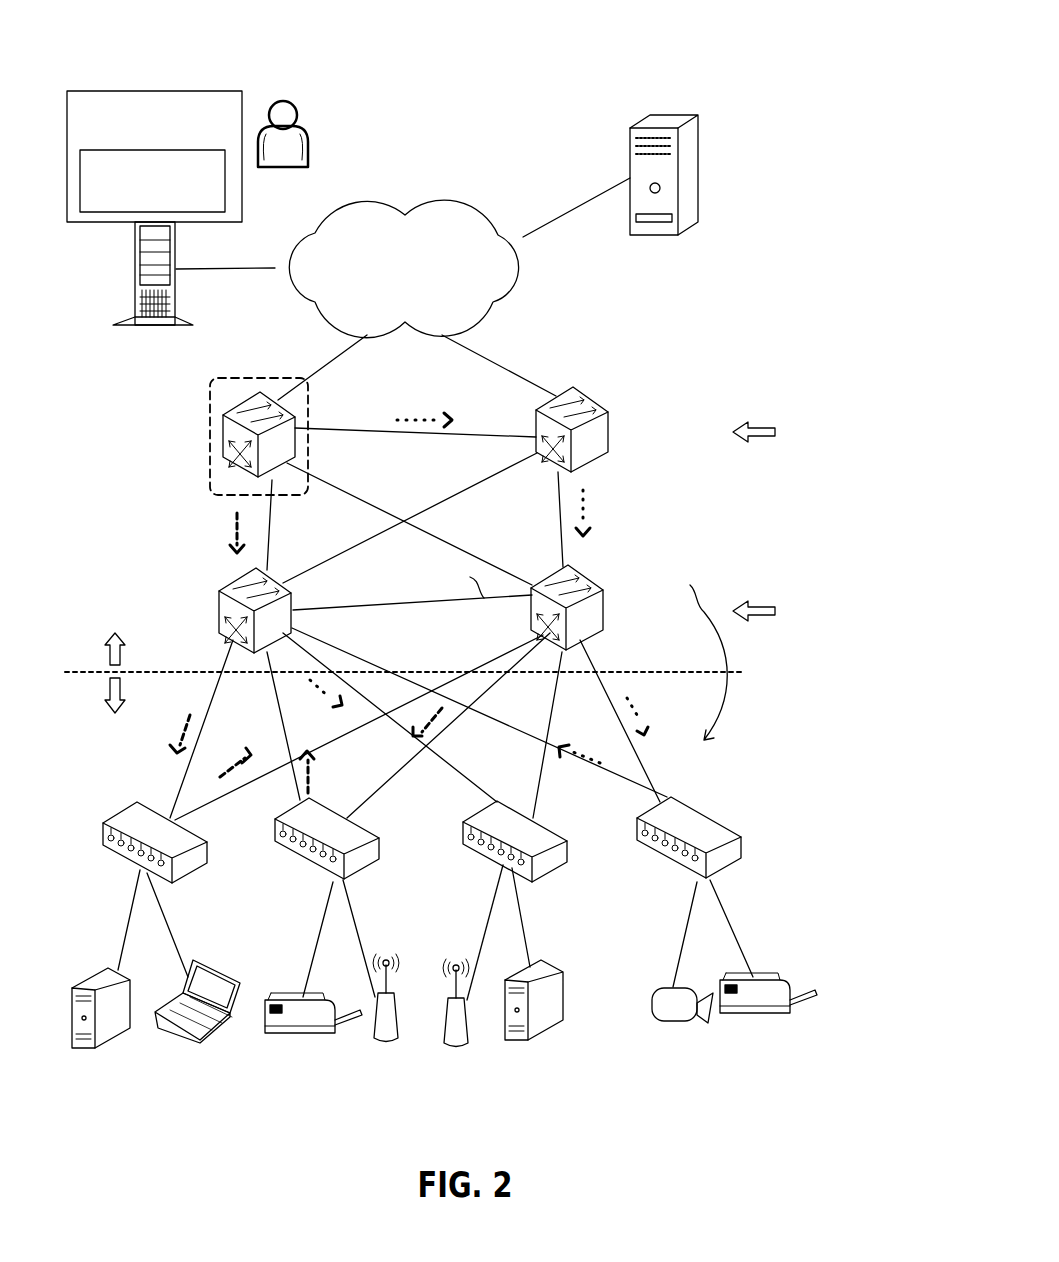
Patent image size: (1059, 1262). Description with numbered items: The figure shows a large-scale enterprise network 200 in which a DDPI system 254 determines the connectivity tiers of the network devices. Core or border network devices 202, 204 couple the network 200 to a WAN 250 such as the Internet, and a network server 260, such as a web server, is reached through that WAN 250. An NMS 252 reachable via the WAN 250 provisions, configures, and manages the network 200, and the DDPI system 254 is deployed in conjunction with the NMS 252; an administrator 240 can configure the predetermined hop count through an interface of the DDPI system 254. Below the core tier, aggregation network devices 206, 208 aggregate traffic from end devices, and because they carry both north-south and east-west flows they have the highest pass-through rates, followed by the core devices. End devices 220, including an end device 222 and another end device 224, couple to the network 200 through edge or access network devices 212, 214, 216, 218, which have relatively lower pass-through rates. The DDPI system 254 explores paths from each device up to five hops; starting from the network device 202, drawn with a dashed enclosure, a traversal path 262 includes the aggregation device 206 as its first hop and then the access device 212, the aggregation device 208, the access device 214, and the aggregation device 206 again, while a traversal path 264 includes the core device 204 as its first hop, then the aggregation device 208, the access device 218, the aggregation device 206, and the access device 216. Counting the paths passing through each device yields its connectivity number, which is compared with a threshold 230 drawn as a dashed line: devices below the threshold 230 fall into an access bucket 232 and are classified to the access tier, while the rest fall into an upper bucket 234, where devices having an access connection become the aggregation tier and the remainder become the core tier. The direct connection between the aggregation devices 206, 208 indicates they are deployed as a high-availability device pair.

The network 200 is at (677, 347).
The core network device 202 is at (223, 427).
The core network device 204 is at (610, 428).
The aggregation network device 206 is at (218, 618).
The aggregation network device 208 is at (608, 600).
The access network device 212 is at (108, 851).
The access network device 214 is at (275, 828).
The access network device 216 is at (465, 850).
The access network device 218 is at (637, 828).
The end devices 220 is at (500, 1000).
The end device 222 is at (565, 990).
The end device 224 is at (300, 1035).
The threshold 230 is at (70, 670).
The access bucket 232 is at (60, 749).
The upper bucket 234 is at (60, 539).
The administrator 240 is at (310, 140).
The WAN 250 is at (403, 269).
The NMS 252 is at (154, 208).
The DDPI system 254 is at (152, 181).
The network server 260 is at (690, 177).
The traversal path 262 is at (552, 15).
The traversal path 264 is at (552, 44).